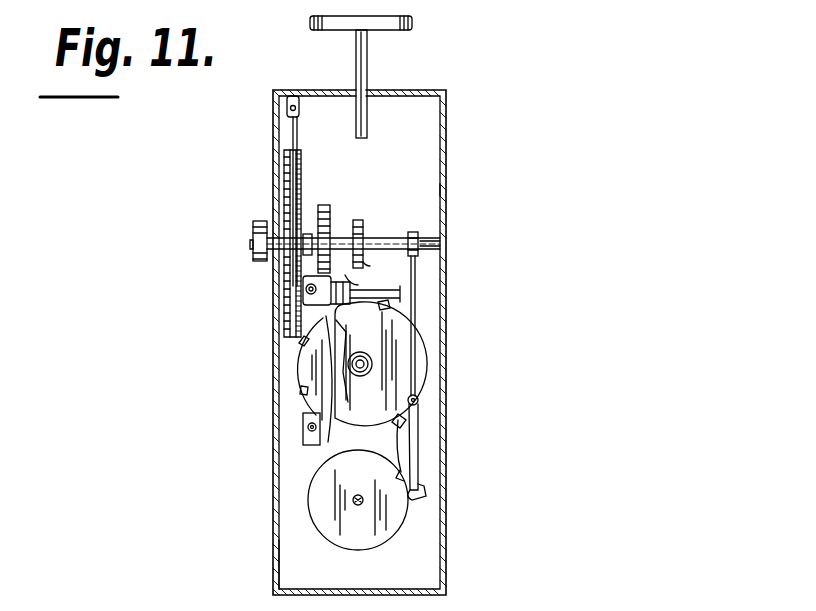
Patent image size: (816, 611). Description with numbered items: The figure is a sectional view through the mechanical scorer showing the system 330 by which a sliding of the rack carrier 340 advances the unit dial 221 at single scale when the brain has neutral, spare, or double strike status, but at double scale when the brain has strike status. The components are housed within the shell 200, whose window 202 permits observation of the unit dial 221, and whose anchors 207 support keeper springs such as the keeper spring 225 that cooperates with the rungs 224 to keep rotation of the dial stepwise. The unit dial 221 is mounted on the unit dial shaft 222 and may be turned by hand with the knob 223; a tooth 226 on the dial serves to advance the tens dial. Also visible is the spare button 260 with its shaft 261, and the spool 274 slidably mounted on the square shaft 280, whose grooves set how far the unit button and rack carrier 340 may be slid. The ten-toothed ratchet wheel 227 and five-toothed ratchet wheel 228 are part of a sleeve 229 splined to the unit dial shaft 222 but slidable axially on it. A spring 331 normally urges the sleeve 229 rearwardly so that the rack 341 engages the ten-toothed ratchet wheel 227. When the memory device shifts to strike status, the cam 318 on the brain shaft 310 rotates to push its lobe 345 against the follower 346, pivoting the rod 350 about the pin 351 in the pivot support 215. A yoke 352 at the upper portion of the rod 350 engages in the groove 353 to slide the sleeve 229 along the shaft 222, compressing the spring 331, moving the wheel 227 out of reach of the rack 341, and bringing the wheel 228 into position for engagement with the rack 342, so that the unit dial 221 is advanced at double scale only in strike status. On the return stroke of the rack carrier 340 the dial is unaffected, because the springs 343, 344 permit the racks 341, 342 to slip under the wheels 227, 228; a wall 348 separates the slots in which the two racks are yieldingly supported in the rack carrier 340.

The shell 200 is at (449, 125).
The spare button 260 is at (412, 24).
The shaft 261 is at (367, 65).
The anchor 207 is at (287, 101).
The keeper spring 225 is at (293, 129).
The tooth 226 is at (296, 151).
The window 202 is at (292, 175).
The rungs 224 is at (300, 193).
The knob 223 is at (253, 240).
The unit dial shaft 222 is at (440, 233).
The yoke 352 is at (440, 257).
The groove 353 is at (445, 188).
The ten-toothed ratchet wheel 227 is at (325, 205).
The five-toothed ratchet wheel 228 is at (360, 220).
The sleeve 229 is at (413, 232).
The rack 342 is at (366, 260).
The wall 348 is at (346, 279).
The pivot support 215 is at (416, 409).
The pin 351 is at (418, 398).
The rod 350 is at (420, 445).
The follower 346 is at (426, 489).
The spring 331 is at (305, 290).
The rack 341 is at (320, 300).
The spring 344 is at (404, 291).
The spool 274 is at (411, 322).
The square shaft 280 is at (372, 362).
The rack carrier 340 is at (329, 353).
The spring 343 is at (318, 332).
The unit dial 221 is at (289, 345).
The lobe 345 is at (405, 470).
The cam 318 is at (318, 505).
The brain shaft 310 is at (364, 502).
The system 330 is at (452, 543).